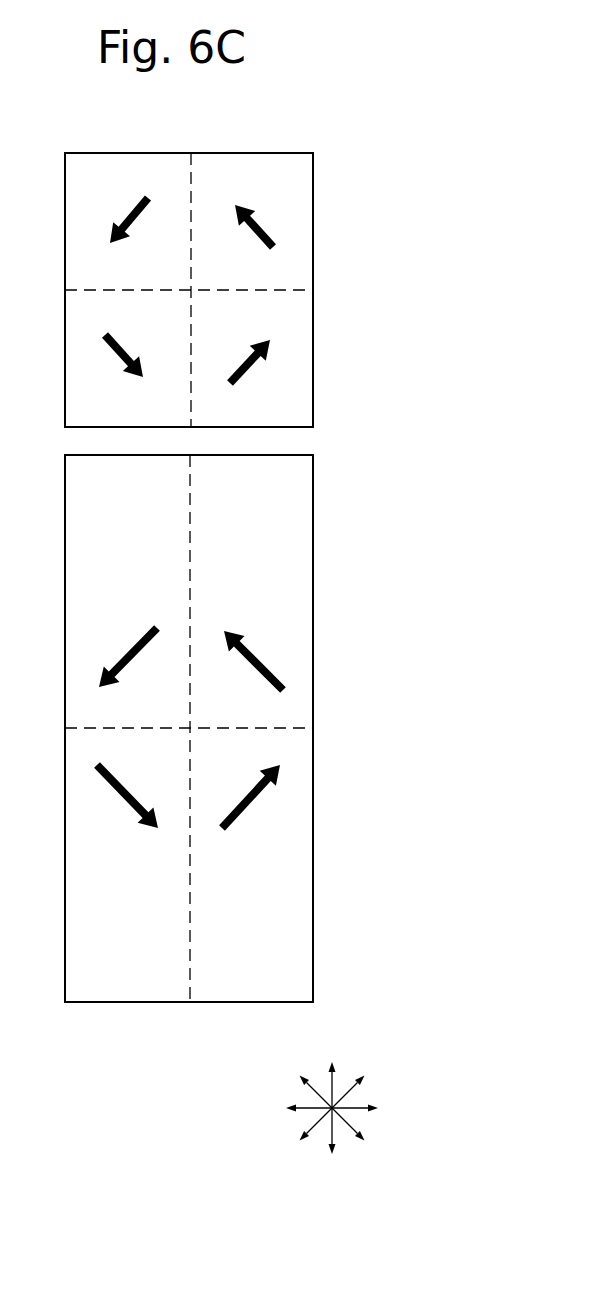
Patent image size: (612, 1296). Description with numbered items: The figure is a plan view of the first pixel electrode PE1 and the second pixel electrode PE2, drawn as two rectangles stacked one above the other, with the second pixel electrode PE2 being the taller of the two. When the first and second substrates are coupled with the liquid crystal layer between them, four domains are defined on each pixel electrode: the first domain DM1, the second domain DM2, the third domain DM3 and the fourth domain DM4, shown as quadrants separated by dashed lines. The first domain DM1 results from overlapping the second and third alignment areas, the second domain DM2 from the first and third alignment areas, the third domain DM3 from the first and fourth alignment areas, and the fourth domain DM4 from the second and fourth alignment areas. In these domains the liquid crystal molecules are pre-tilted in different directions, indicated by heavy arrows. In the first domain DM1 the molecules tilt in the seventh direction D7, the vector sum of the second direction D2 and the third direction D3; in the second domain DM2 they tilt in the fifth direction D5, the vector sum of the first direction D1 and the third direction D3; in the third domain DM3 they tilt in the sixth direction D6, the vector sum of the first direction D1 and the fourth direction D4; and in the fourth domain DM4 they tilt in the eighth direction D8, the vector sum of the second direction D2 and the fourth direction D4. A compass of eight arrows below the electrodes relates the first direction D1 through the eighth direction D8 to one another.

The first pixel electrode PE1 is at (313, 346).
The second pixel electrode PE2 is at (313, 641).
The first domain DM1 is at (222, 488).
The second domain DM2 is at (159, 488).
The third domain DM3 is at (159, 530).
The fourth domain DM4 is at (222, 530).
The first direction D1 is at (332, 1073).
The second direction D2 is at (332, 1144).
The third direction D3 is at (295, 1108).
The fourth direction D4 is at (369, 1108).
The fifth direction D5 is at (206, 680).
The sixth direction D6 is at (241, 748).
The seventh direction D7 is at (266, 645).
The eighth direction D8 is at (303, 712).